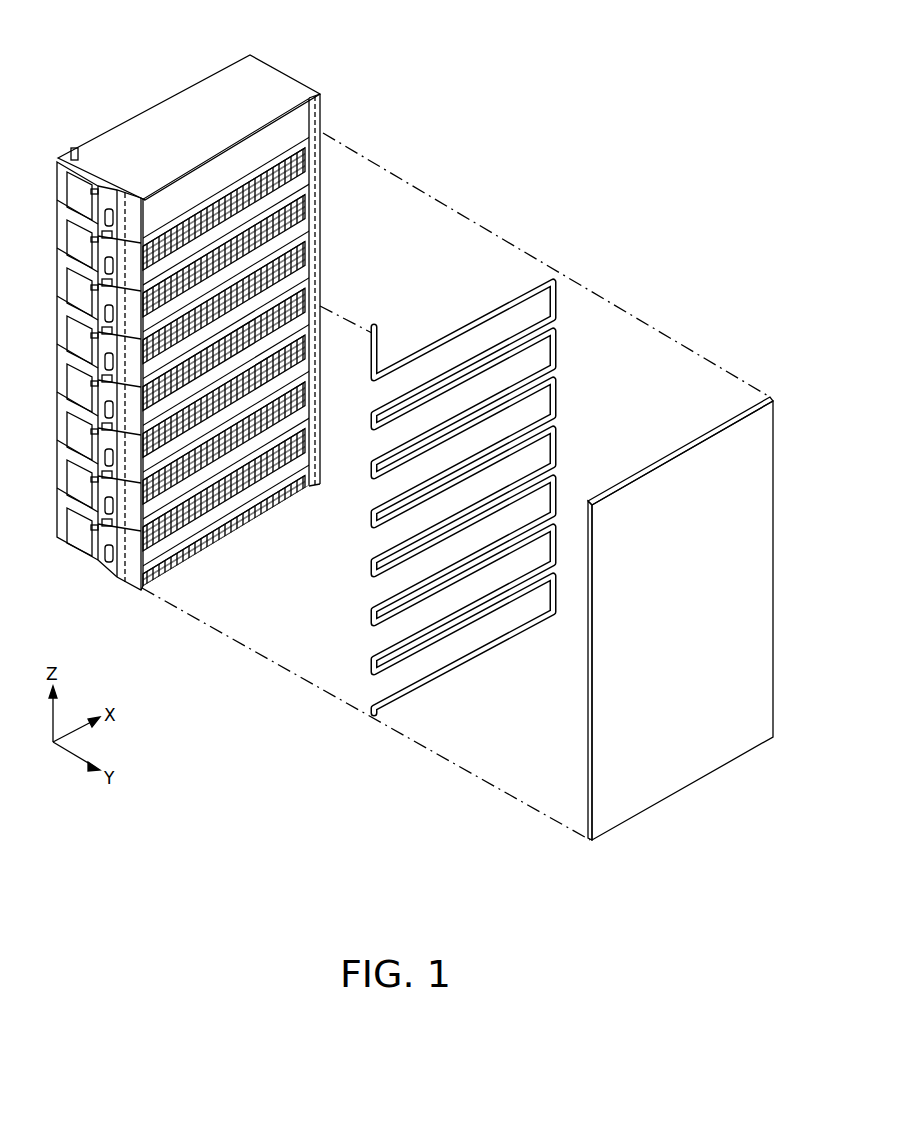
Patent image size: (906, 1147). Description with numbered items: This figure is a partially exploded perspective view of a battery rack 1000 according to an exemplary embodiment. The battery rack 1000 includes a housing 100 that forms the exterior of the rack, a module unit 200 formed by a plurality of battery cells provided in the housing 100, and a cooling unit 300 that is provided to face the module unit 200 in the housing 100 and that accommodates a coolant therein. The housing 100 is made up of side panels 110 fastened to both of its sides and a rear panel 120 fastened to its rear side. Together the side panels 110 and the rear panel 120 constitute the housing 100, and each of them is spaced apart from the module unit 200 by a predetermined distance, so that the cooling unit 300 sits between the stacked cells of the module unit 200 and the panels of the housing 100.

The battery rack 1000 is at (412, 420).
The housing 100 is at (237, 314).
The rear panel 120 is at (292, 80).
The module unit 200 is at (316, 186).
The cooling unit 300 is at (568, 349).
The side panels 110 is at (720, 752).